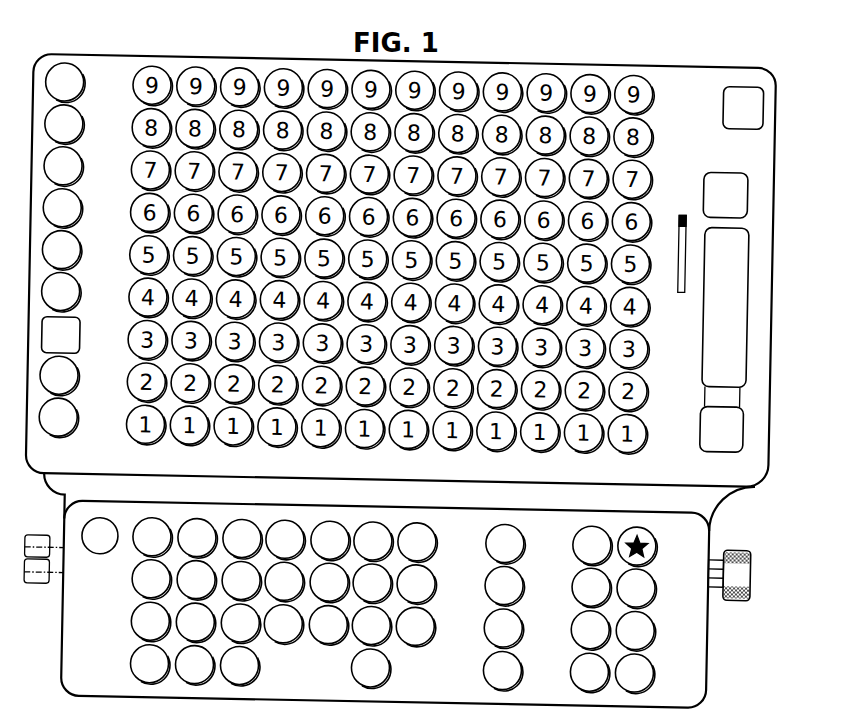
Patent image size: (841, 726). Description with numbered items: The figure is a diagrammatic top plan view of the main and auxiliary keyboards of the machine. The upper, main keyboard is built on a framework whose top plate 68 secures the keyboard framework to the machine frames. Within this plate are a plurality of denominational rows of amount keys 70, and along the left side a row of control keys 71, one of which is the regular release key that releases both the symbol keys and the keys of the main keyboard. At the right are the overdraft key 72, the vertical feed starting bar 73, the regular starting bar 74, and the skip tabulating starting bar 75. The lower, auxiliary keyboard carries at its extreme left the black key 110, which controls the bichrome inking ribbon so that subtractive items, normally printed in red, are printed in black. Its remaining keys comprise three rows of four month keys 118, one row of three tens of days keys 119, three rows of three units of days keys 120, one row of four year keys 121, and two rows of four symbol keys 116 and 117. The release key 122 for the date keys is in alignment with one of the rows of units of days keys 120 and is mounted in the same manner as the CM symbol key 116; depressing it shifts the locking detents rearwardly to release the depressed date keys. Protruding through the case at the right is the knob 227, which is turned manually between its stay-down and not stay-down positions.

The top plate 68 is at (116, 50).
The amount keys 70 is at (177, 82).
The control keys 71 is at (62, 72).
The overdraft key 72 is at (717, 98).
The vertical feed starting bar 73 is at (725, 171).
The regular starting bar 74 is at (738, 269).
The skip tabulating starting bar 75 is at (736, 424).
The black key 110 is at (108, 554).
The symbol keys 116 is at (645, 527).
The symbol keys 117 is at (595, 528).
The month keys 118 is at (190, 530).
The tens of days keys 119 is at (285, 527).
The units of days keys 120 is at (408, 532).
The year keys 121 is at (523, 499).
The release key 122 is at (392, 662).
The knob 227 is at (734, 594).